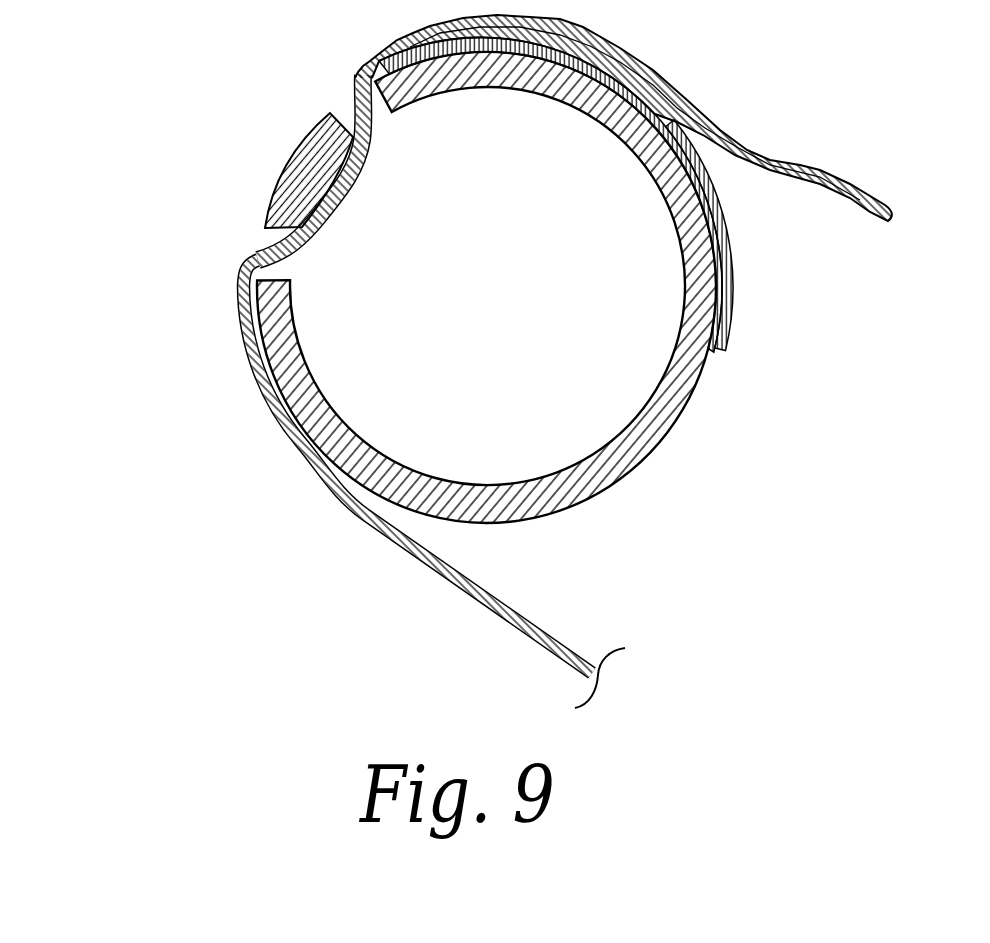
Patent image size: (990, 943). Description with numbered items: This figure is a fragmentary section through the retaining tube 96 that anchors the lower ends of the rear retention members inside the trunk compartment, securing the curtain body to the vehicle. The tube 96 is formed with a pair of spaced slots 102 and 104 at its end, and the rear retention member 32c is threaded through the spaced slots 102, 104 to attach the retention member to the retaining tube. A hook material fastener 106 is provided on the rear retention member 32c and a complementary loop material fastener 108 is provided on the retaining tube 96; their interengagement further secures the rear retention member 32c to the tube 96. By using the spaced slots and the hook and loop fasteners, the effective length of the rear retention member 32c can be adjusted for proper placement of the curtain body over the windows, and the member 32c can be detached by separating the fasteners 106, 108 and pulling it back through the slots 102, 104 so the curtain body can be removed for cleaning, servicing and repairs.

The retaining tube 96 is at (657, 455).
The slot 102 is at (278, 281).
The slot 104 is at (345, 120).
The hook material fastener 106 is at (674, 122).
The loop material fastener 108 is at (730, 338).
The rear retention member 32c is at (407, 553).